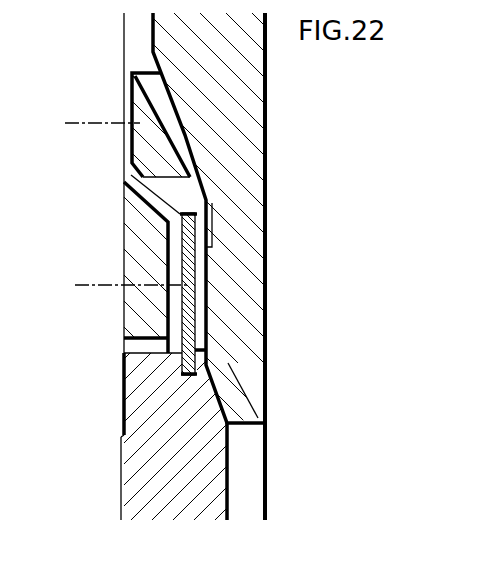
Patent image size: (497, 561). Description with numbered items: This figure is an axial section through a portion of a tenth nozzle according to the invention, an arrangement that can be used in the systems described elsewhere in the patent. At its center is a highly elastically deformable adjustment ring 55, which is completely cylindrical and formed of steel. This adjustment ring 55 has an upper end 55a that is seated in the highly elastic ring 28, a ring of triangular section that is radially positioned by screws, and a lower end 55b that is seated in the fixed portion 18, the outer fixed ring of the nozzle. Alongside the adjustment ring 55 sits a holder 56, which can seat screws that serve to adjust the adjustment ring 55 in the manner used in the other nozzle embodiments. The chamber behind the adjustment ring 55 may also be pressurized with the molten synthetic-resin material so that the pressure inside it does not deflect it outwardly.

The outer fixed ring 18 is at (143, 392).
The highly elastic ring 28 is at (160, 153).
The adjustment ring 55 is at (190, 289).
The upper end 55a is at (189, 227).
The lower end 55b is at (197, 361).
The holder 56 is at (142, 318).